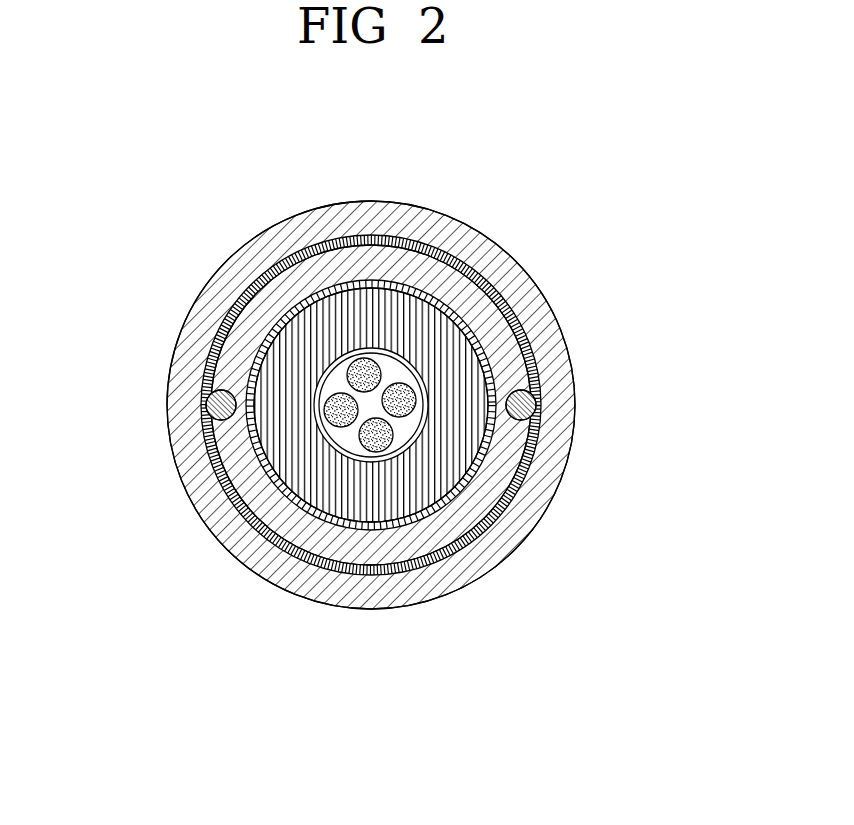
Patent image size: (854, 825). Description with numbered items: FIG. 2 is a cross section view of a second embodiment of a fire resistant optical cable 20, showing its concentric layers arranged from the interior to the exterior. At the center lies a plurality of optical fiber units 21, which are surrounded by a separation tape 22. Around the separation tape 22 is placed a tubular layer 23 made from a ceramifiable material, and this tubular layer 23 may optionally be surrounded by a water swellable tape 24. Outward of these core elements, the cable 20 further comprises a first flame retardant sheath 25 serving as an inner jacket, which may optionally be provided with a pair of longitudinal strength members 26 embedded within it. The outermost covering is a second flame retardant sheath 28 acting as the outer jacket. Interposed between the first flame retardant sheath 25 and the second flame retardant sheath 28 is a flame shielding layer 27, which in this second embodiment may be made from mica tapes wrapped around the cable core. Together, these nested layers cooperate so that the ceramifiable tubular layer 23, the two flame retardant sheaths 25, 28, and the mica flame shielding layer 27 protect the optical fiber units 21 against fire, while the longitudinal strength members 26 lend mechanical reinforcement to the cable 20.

The fire resistant optical cable 20 is at (168, 268).
The optical fiber units 21 is at (323, 408).
The separation tape 22 is at (338, 450).
The tubular layer 23 is at (323, 520).
The water swellable tape 24 is at (368, 528).
The first flame retardant sheath 25 is at (498, 500).
The longitudinal strength members 26 is at (543, 380).
The flame shielding layer 27 is at (450, 558).
The second flame retardant sheath 28 is at (477, 230).